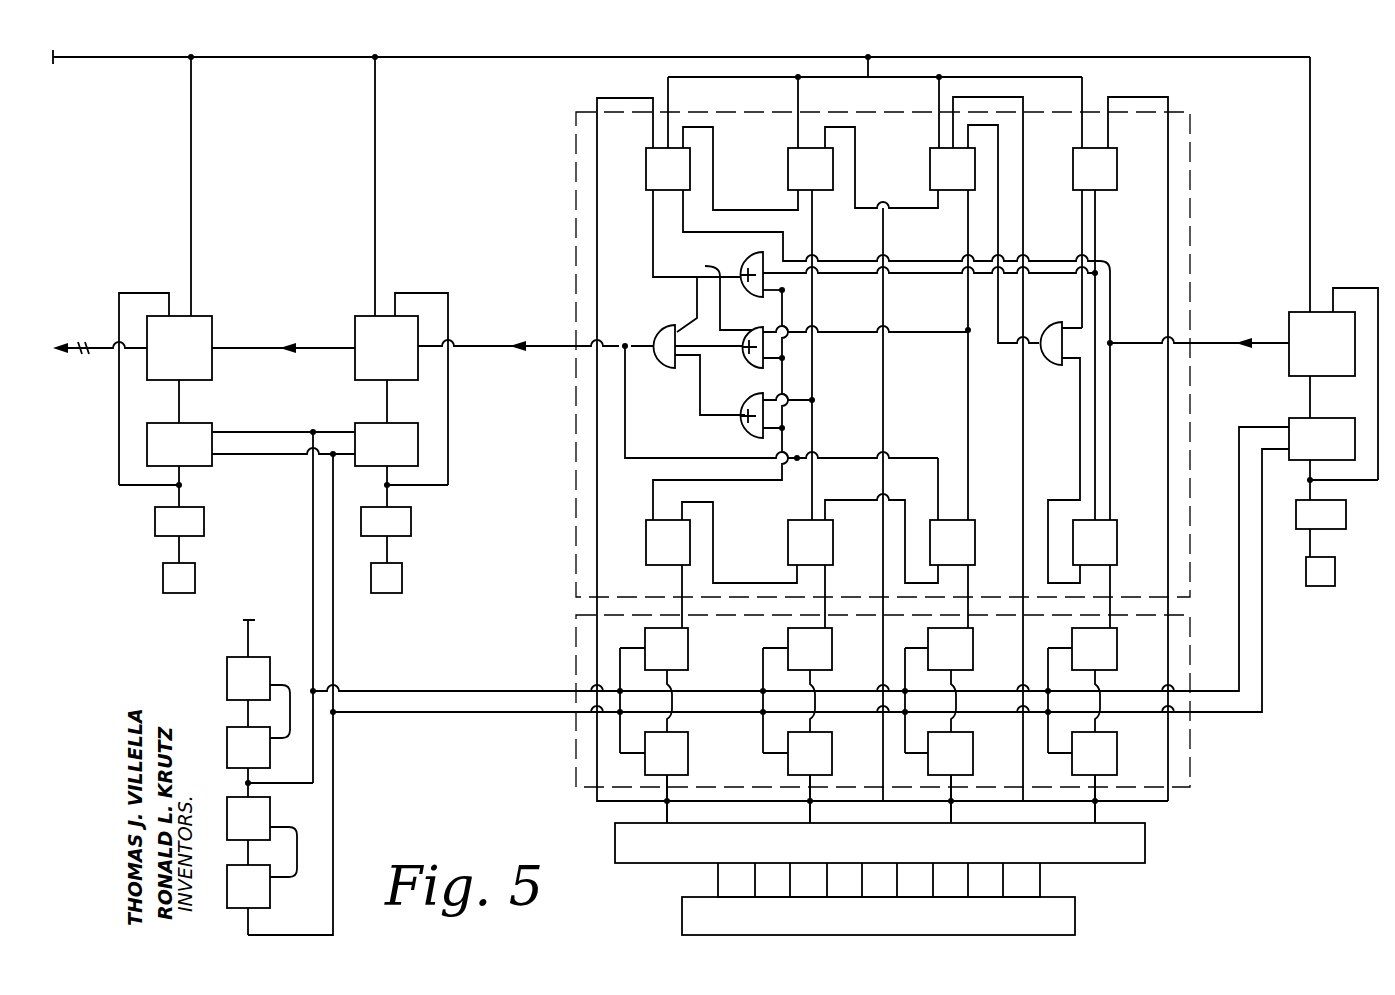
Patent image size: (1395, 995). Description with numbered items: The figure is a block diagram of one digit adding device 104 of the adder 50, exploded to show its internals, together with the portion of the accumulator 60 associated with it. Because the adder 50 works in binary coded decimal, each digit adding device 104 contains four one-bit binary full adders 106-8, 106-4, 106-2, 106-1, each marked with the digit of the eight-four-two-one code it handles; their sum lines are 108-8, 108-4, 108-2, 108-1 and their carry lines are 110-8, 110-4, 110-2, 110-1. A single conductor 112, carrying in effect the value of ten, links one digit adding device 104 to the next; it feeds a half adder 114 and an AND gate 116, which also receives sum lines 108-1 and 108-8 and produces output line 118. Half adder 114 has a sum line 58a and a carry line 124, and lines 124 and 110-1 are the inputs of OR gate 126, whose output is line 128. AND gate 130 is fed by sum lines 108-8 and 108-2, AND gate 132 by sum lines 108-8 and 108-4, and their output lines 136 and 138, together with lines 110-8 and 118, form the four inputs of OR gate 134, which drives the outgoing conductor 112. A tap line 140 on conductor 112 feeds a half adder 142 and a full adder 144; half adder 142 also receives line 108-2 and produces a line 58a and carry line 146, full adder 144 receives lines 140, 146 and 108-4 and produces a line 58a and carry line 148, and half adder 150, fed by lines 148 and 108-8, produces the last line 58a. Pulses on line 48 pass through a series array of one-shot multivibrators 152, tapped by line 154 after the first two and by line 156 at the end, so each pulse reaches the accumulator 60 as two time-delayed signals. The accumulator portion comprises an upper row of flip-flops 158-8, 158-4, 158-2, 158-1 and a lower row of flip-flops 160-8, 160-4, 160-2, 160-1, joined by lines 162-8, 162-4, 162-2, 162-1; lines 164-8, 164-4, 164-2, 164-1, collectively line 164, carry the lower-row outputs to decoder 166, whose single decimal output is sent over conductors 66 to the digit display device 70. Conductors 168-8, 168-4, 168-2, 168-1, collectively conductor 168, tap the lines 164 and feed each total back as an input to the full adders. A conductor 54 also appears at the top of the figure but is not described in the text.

The line 48 is at (255, 630).
The adder 50 is at (158, 232).
The supply line 54 is at (262, 57).
The sum line 58a is at (682, 586).
The accumulator 60 is at (345, 424).
The conductors 66 is at (192, 552).
The digit display device 70 is at (195, 580).
The digit adding device 104 is at (345, 313).
The one bit binary full adder 106-1 is at (1073, 182).
The one bit binary full adder 106-2 is at (930, 180).
The one bit binary full adder 106-4 is at (788, 174).
The one bit binary full adder 106-8 is at (646, 175).
The sum line 108-1 is at (1095, 220).
The sum line 108-2 is at (968, 240).
The sum line 108-4 is at (812, 228).
The sum line 108-8 is at (718, 232).
The carry line 110-1 is at (1082, 230).
The carry line 110-2 is at (910, 208).
The carry line 110-4 is at (713, 140).
The carry line 110-8 is at (653, 258).
The conductor 112 is at (97, 356).
The one-bit binary half adder 114 is at (1117, 540).
The AND gate 116 is at (740, 258).
The output line 118 is at (711, 293).
The carry line 124 is at (1080, 424).
The OR gate 126 is at (1045, 366).
The output line 128 is at (1015, 350).
The AND gate 130 is at (762, 328).
The AND gate 132 is at (756, 400).
The OR gate 134 is at (665, 370).
The output line 136 is at (700, 360).
The output line 138 is at (700, 404).
The tap line 140 is at (712, 458).
The half adder 142 is at (995, 552).
The full adder 144 is at (833, 527).
The carry line 146 is at (896, 486).
The carry line 148 is at (713, 548).
The half adder 150 is at (646, 546).
The one-shot multivibrator 152 is at (270, 796).
The line 154 is at (290, 786).
The line 156 is at (278, 935).
The upper row flip-flop 158-1 is at (1136, 650).
The upper row flip-flop 158-2 is at (992, 650).
The upper row flip-flop 158-4 is at (852, 650).
The upper row flip-flop 158-8 is at (688, 638).
The lower row flip-flop 160-1 is at (1136, 755).
The lower row flip-flop 160-2 is at (992, 755).
The lower row flip-flop 160-4 is at (852, 755).
The lower row flip-flop 160-8 is at (688, 743).
The line 162-1 is at (1100, 680).
The line 162-2 is at (956, 680).
The line 162-4 is at (815, 680).
The line 162-8 is at (680, 680).
The line 164 is at (183, 485).
The line 164-1 is at (1095, 802).
The line 164-2 is at (951, 802).
The line 164-4 is at (810, 802).
The line 164-8 is at (667, 804).
The decoder device 166 is at (204, 522).
The conductor 168 is at (119, 407).
The conductor 168-1 is at (1168, 438).
The conductor 168-2 is at (1023, 490).
The conductor 168-4 is at (883, 388).
The conductor 168-8 is at (650, 488).